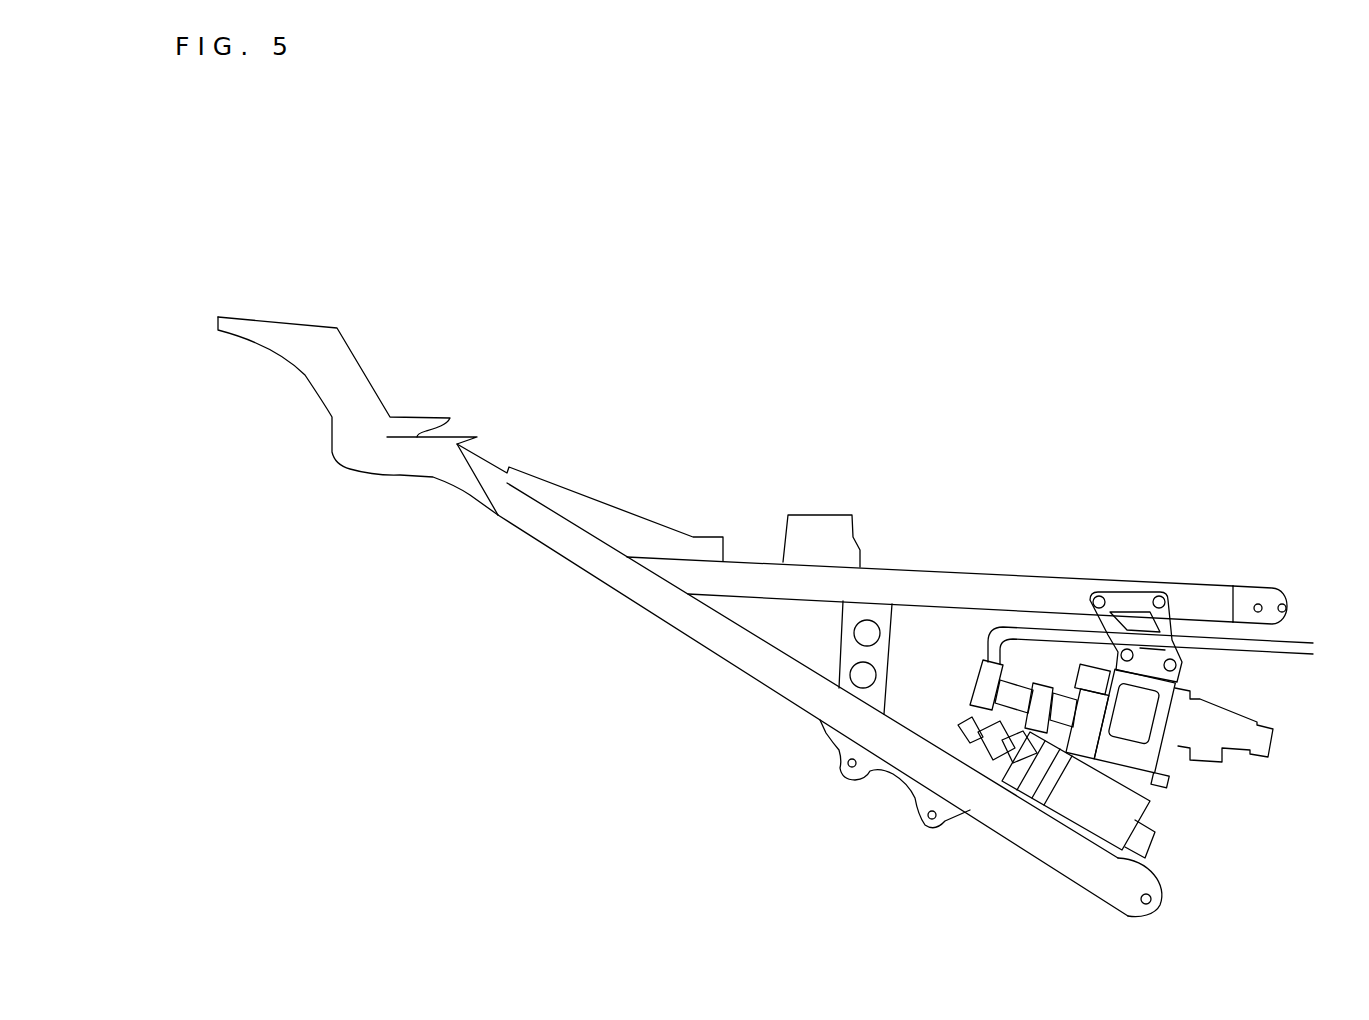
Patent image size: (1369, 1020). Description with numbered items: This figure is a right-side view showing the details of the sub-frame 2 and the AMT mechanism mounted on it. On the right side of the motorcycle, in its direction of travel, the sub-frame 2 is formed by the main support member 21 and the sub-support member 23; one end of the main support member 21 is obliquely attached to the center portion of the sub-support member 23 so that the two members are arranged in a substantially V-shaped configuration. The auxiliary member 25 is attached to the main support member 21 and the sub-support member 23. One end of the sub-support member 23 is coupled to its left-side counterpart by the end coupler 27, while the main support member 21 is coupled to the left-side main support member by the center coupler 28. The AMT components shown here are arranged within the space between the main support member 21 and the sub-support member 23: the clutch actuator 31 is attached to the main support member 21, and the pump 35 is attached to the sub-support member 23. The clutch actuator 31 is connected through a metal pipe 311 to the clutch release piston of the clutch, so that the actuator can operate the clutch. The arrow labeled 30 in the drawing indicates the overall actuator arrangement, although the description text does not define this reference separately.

The sub-frame 2 is at (1271, 429).
The main support member 21 is at (960, 583).
The sub-support member 23 is at (740, 650).
The auxiliary member 25 is at (848, 653).
The end coupler 27 is at (448, 452).
The center coupler 28 is at (820, 528).
The steering damper assembly 30 is at (1160, 704).
The clutch actuator 31 is at (1132, 713).
The metal pipe 311 is at (1303, 642).
The pump 35 is at (1120, 812).